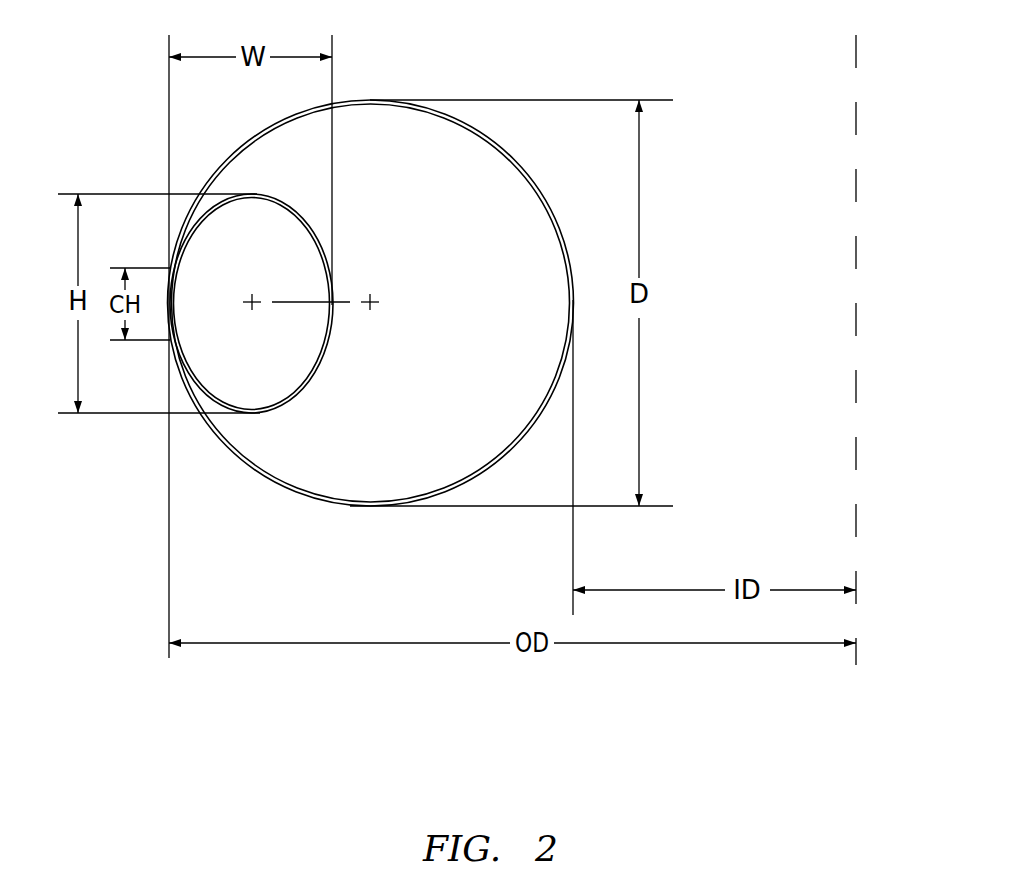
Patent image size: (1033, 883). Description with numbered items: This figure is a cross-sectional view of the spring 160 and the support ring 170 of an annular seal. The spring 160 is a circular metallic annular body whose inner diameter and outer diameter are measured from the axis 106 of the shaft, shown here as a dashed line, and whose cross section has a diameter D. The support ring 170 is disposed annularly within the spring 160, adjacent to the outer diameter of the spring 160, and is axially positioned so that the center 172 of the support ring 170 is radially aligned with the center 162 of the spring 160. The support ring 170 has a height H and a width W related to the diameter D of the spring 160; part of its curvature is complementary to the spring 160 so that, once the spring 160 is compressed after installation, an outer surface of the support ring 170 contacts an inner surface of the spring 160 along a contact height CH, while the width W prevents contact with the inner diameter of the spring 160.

The axis 106 is at (857, 113).
The spring 160 is at (512, 148).
The center of the spring 162 is at (373, 298).
The support ring 170 is at (293, 398).
The center of the support ring 172 is at (255, 298).